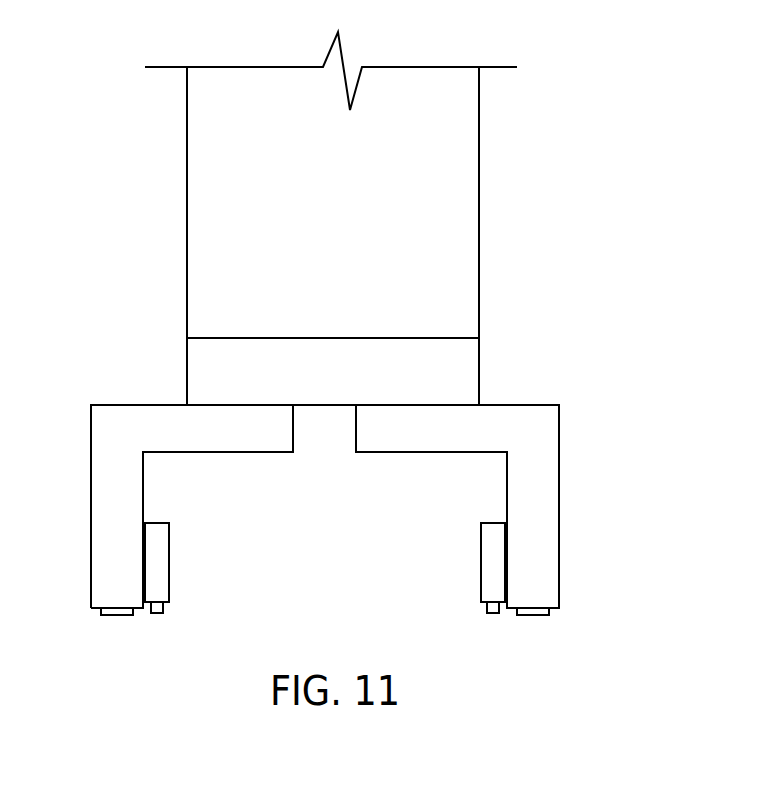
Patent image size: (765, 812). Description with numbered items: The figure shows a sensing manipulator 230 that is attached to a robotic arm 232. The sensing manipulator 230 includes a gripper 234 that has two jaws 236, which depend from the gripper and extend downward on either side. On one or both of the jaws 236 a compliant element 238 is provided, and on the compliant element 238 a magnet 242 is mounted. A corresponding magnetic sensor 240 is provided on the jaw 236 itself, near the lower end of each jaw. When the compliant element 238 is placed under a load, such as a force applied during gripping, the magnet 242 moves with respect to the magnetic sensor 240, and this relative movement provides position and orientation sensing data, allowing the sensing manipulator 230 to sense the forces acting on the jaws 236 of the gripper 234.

The sensing manipulator 230 is at (647, 342).
The robotic arm 232 is at (462, 146).
The gripper 234 is at (465, 365).
The jaws 236 is at (95, 468).
The compliant element 238 is at (160, 560).
The magnetic sensor 240 is at (112, 615).
The magnet 242 is at (157, 615).